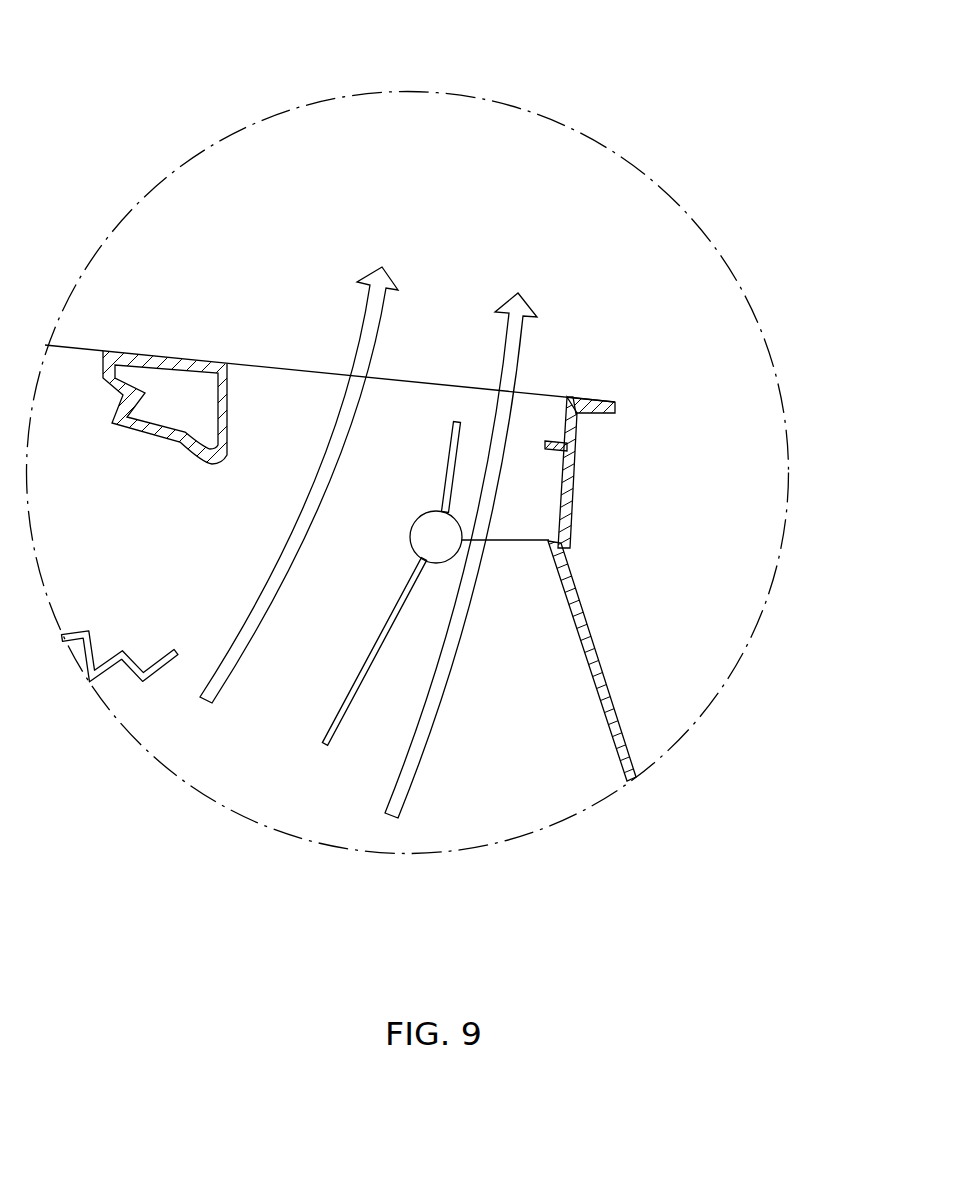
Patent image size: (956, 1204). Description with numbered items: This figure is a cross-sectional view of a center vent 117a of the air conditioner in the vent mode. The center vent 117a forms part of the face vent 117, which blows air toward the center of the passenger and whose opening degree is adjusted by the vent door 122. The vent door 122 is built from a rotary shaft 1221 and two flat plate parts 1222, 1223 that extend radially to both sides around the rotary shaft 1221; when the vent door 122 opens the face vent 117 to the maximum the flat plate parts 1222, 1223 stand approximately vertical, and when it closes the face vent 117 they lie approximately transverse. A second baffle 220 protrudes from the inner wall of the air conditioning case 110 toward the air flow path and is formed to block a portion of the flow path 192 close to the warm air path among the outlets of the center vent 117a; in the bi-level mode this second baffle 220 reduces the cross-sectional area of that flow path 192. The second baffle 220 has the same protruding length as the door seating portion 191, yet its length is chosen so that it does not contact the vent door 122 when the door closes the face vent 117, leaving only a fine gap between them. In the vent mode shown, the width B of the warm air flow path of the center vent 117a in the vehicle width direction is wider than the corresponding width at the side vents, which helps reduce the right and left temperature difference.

The face vent 117 is at (178, 272).
The center vent 117a is at (282, 391).
The flat plate part 1222 is at (443, 462).
The flow path 192 is at (536, 506).
The second baffle 220 is at (570, 398).
The air conditioning case 110 is at (577, 487).
The door seating portion 191 is at (577, 505).
The rotary shaft 1221 is at (434, 537).
The flat plate part 1223 is at (370, 653).
The vent door 122 is at (340, 495).
The width of the warm air flow path of the center vent B is at (503, 541).